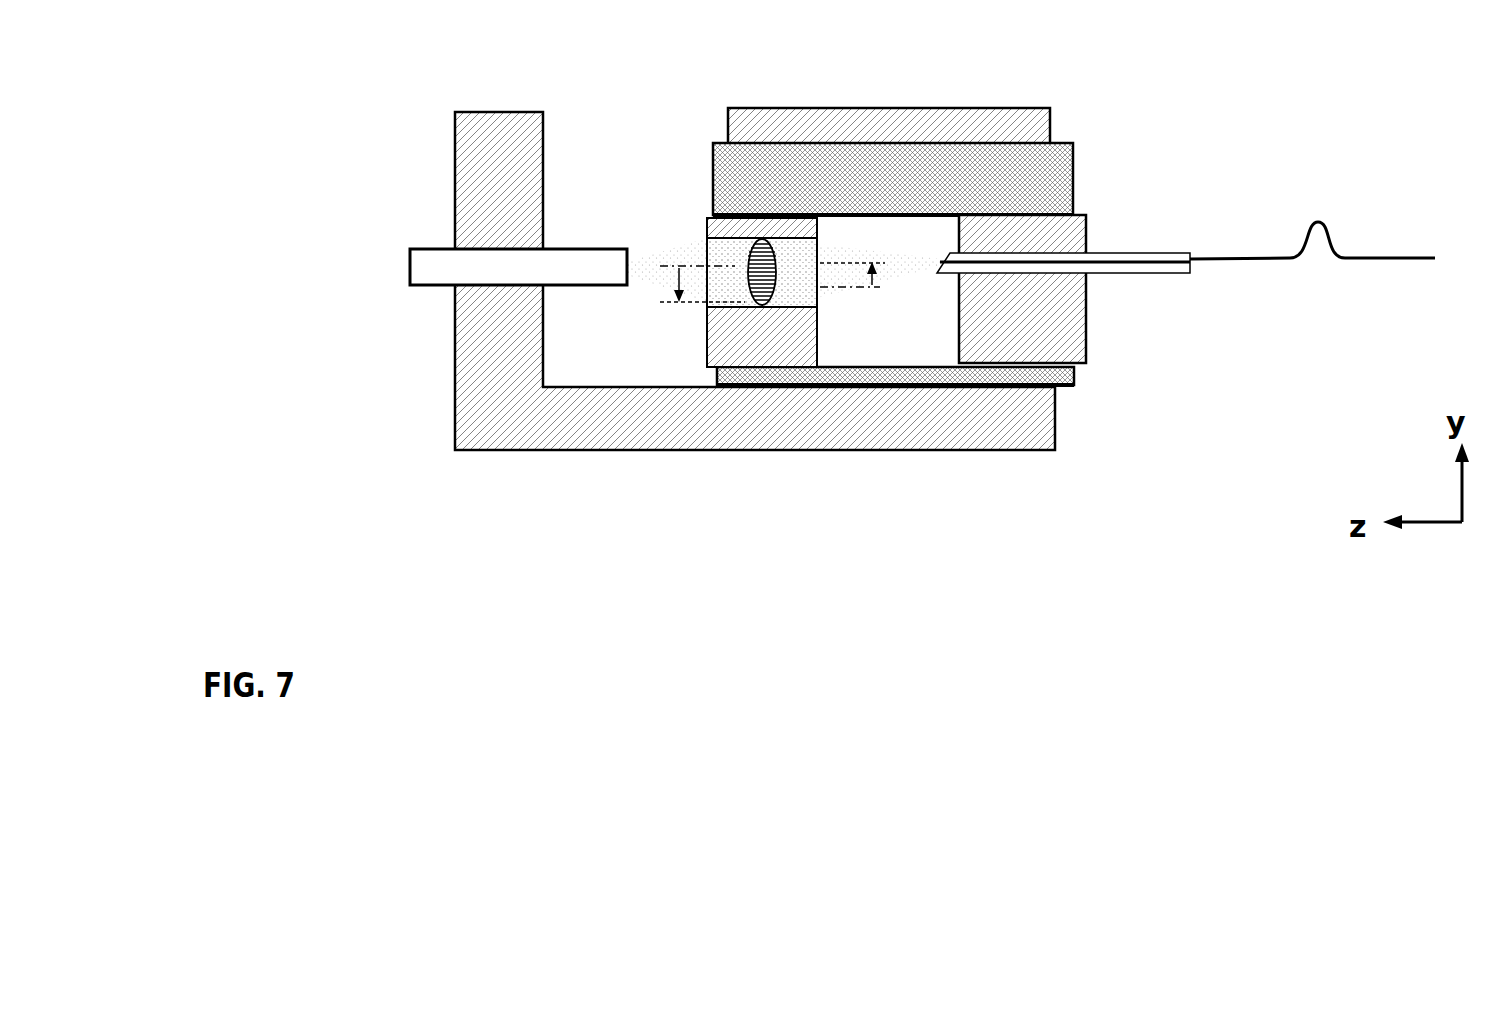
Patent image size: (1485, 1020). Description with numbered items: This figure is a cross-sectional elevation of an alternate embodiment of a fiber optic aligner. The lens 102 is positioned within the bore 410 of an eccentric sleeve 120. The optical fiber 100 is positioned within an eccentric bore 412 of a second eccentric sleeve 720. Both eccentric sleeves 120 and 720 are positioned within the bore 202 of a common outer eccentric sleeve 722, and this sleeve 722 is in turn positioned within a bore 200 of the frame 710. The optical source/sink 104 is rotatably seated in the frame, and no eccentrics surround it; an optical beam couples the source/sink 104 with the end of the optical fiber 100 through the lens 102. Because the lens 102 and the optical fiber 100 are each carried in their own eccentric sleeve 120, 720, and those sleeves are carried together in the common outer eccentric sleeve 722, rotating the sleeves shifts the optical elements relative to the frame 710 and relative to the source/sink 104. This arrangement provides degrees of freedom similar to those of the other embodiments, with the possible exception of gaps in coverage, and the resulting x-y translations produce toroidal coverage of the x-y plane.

The frame 710 is at (466, 128).
The optical source/sink 104 is at (432, 260).
The bore of the frame 200 is at (846, 255).
The common outer eccentric sleeve 722 is at (735, 144).
The bore of the outer eccentric sleeve 202 is at (707, 243).
The bore of the inner sleeve 410 is at (798, 241).
The lens 102 is at (773, 281).
The eccentric sleeve 120 is at (707, 336).
The eccentric sleeve 720 is at (1088, 308).
The eccentric bore 412 is at (1080, 258).
The optical fiber 100 is at (1338, 257).